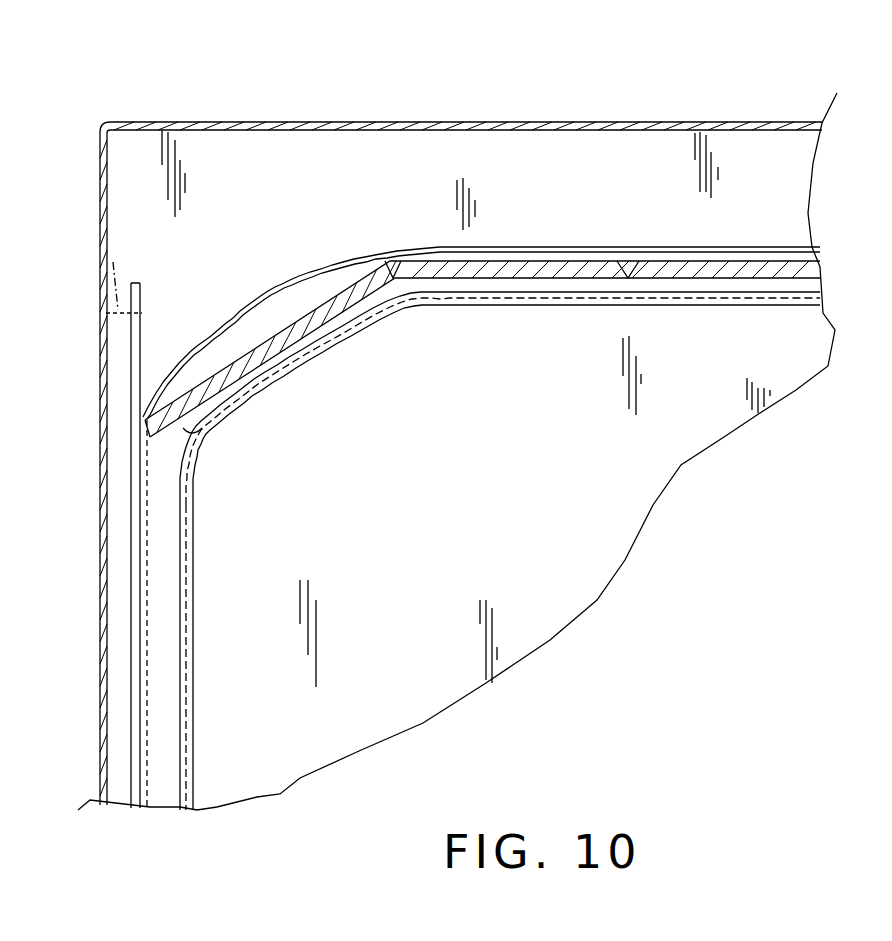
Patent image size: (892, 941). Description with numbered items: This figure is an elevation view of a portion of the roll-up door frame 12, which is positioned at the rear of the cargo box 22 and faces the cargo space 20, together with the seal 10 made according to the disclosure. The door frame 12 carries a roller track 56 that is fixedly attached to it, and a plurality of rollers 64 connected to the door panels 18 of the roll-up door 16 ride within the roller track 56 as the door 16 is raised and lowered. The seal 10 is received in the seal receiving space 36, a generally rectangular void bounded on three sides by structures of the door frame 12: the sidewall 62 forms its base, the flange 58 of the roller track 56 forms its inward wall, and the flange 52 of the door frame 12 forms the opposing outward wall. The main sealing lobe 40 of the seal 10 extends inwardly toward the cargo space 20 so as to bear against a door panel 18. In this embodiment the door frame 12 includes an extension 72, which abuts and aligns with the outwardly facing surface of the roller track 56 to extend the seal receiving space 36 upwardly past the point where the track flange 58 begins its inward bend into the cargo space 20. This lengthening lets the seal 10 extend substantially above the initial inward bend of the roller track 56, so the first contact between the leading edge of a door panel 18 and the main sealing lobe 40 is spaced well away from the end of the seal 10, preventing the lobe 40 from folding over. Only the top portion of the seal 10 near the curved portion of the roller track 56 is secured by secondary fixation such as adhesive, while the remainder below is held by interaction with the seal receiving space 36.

The seal 10 is at (113, 262).
The roll-up door frame 12 is at (92, 480).
The roll-up door 16 is at (537, 215).
The door panel 18 is at (300, 333).
The cargo space 20 is at (510, 626).
The cargo box 22 is at (713, 86).
The seal receiving space 36 is at (120, 347).
The main sealing lobe 40 is at (142, 517).
The flange 52 is at (100, 648).
The roller track 56 is at (249, 299).
The flange of roller track 58 is at (138, 707).
The sidewall 62 is at (118, 178).
The roller 64 is at (190, 428).
The extension 72 is at (136, 290).